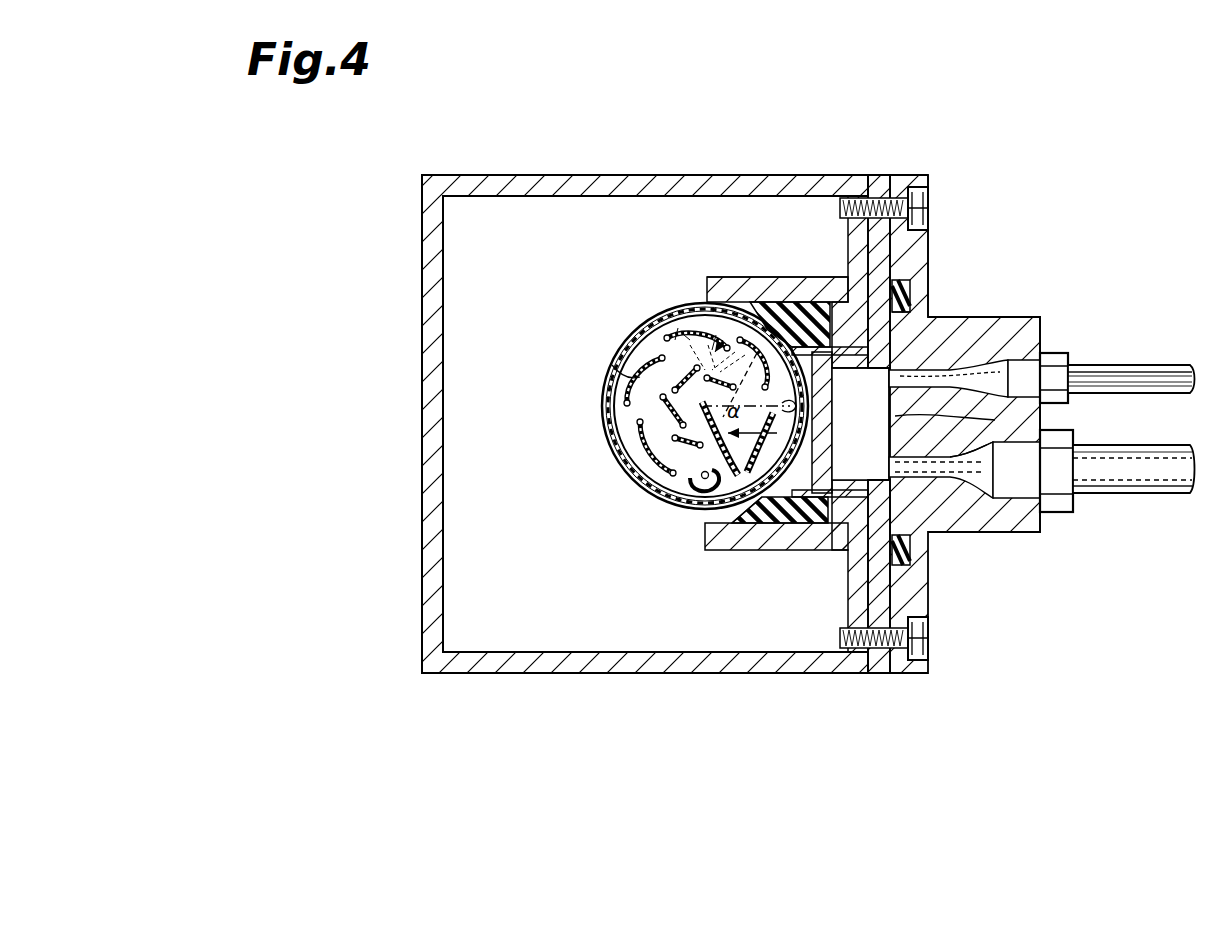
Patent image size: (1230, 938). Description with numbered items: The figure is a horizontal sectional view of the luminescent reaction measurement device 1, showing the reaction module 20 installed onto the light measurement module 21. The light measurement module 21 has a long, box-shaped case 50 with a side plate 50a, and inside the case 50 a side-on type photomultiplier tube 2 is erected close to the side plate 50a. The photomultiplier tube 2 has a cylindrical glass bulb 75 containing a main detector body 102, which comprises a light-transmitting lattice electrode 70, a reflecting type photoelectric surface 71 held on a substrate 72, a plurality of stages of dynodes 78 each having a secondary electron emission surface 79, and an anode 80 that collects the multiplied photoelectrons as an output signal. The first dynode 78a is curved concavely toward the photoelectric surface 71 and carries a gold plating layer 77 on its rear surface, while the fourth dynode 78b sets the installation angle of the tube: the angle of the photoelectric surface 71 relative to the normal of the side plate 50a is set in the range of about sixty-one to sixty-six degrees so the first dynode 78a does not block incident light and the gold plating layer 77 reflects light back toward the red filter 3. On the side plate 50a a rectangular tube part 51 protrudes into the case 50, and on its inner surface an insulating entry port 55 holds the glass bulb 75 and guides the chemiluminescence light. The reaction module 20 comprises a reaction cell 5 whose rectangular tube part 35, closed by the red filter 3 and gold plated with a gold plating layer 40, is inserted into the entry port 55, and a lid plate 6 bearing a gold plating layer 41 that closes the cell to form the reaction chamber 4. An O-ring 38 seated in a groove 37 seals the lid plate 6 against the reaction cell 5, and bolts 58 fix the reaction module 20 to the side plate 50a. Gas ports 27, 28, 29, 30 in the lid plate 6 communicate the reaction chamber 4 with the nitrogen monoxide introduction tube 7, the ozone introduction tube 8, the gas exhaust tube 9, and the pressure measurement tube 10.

The luminescent reaction measurement device 1 is at (930, 722).
The photomultiplier tube 2 is at (597, 430).
The red filter 3 is at (825, 503).
The reaction chamber 4 is at (882, 383).
The reaction cell 5 is at (880, 178).
The lid plate 6 is at (910, 178).
The nitrogen monoxide introduction tube 7 is at (1120, 463).
The ozone introduction tube 8 is at (1085, 366).
The gas exhaust tube 9 is at (1110, 495).
The pressure measurement tube 10 is at (1125, 370).
The reaction module 20 is at (972, 137).
The light measurement module 21 is at (760, 160).
The gas port 27 is at (985, 492).
The gas port 28 is at (1040, 320).
The gas port 29 is at (1030, 520).
The gas port 30 is at (990, 345).
The rectangular tube part 35 is at (858, 372).
The groove 37 is at (905, 283).
The O-ring 38 is at (905, 298).
The gold plating layer 40 is at (877, 370).
The gold plating layer 41 is at (1000, 420).
The case 50 is at (612, 187).
The side plate 50a is at (858, 588).
The rectangular tube part 51 is at (748, 292).
The entry port 55 is at (790, 315).
The bolts 58 is at (922, 210).
The lattice electrode 70 is at (764, 512).
The photoelectric surface 71 is at (748, 525).
The substrate 72 is at (722, 447).
The glass bulb 75 is at (612, 365).
The gold plating layer 77 is at (800, 340).
The dynodes 78 is at (690, 332).
The first dynode 78a is at (690, 340).
The fourth dynode 78b is at (672, 383).
The secondary electron emission surface 79 is at (750, 332).
The anode 80 is at (704, 492).
The main detector body 102 is at (630, 475).